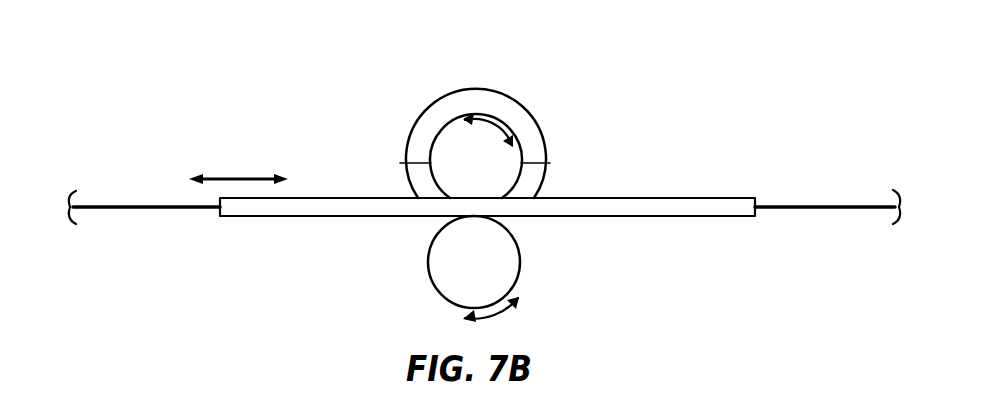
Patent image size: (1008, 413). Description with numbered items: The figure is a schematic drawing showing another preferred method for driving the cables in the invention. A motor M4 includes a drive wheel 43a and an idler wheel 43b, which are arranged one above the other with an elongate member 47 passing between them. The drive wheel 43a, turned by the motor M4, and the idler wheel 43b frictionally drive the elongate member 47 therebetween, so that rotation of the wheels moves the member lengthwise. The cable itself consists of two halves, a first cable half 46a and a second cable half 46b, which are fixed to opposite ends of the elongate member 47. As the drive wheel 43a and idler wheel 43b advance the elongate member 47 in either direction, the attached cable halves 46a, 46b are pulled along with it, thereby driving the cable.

The motor M4 is at (475, 88).
The drive wheel 43a is at (434, 151).
The idler wheel 43b is at (513, 262).
The elongate member 47 is at (683, 199).
The cable half 46a is at (147, 208).
The cable half 46b is at (820, 208).